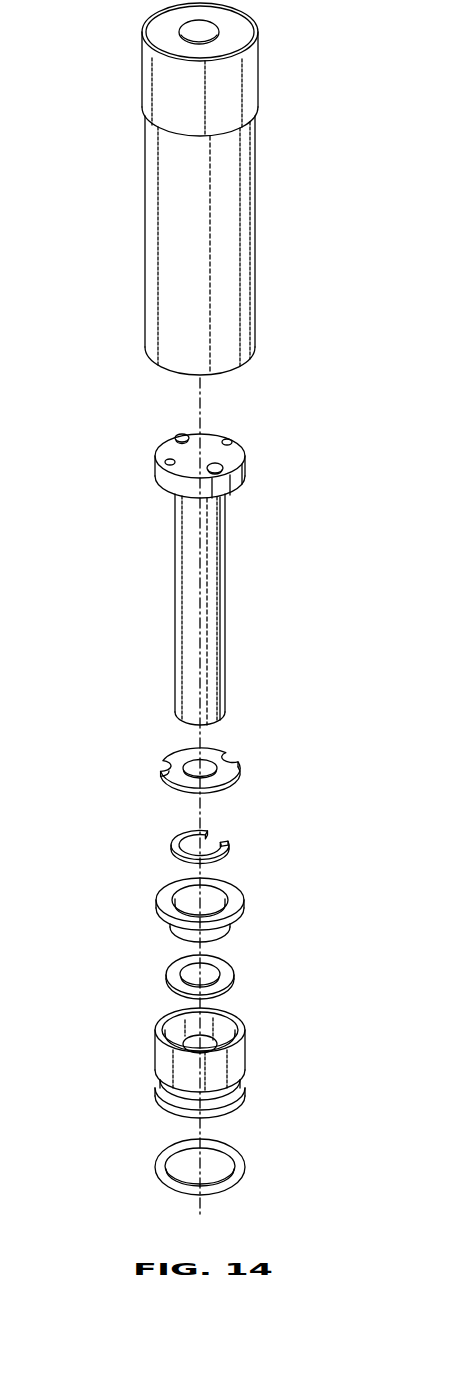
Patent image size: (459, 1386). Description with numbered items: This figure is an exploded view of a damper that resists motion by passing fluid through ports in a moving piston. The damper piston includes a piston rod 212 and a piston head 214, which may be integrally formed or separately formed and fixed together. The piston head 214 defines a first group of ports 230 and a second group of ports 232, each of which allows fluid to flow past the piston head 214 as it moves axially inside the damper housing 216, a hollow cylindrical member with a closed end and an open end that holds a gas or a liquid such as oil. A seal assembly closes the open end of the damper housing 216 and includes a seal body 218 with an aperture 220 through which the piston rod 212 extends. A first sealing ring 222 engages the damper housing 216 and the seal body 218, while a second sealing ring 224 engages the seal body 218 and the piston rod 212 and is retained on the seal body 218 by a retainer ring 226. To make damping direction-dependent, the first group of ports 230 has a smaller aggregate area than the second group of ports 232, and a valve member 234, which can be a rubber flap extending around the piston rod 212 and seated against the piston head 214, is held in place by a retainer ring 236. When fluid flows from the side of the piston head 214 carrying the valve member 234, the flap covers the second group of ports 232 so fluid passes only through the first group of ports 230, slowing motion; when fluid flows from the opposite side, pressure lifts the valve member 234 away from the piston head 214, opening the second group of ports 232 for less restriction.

The piston rod 212 is at (150, 557).
The piston head 214 is at (206, 444).
The damper housing 216 is at (140, 195).
The seal body 218 is at (172, 1035).
The aperture 220 is at (223, 1024).
The first sealing ring 222 is at (252, 1158).
The second sealing ring 224 is at (160, 967).
The retainer ring 226 is at (252, 897).
The first group of ports 230 is at (229, 436).
The second group of ports 232 is at (179, 432).
The valve member 234 is at (160, 764).
The retainer ring 236 is at (240, 838).